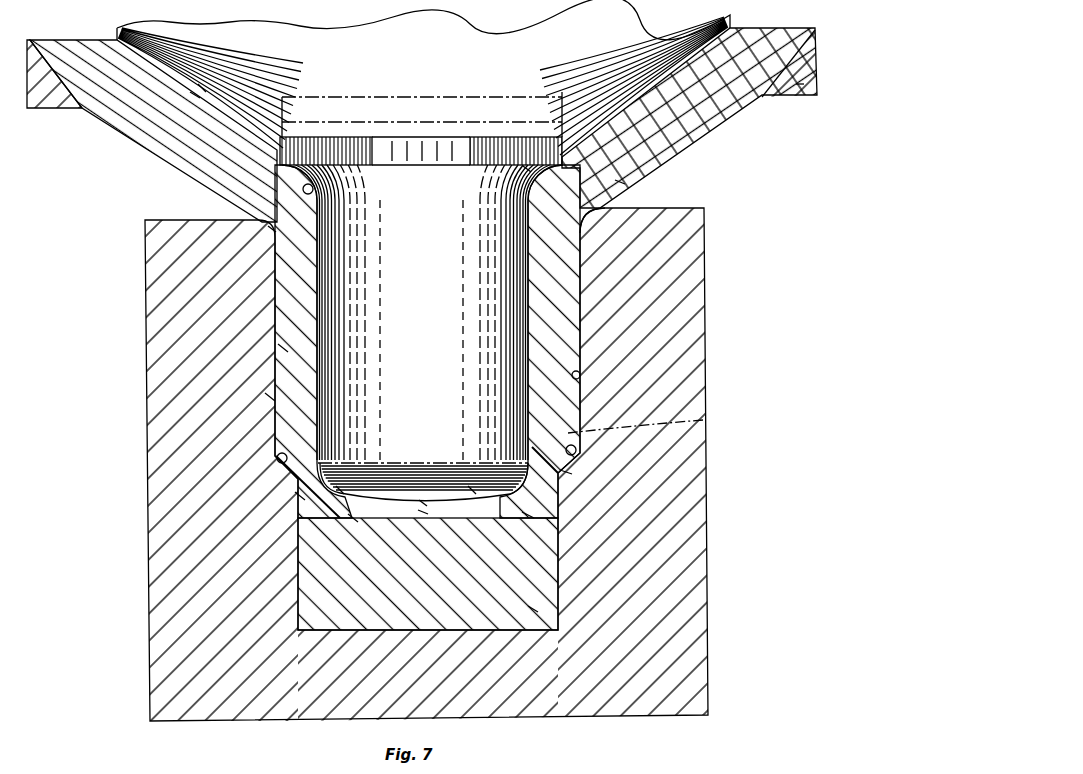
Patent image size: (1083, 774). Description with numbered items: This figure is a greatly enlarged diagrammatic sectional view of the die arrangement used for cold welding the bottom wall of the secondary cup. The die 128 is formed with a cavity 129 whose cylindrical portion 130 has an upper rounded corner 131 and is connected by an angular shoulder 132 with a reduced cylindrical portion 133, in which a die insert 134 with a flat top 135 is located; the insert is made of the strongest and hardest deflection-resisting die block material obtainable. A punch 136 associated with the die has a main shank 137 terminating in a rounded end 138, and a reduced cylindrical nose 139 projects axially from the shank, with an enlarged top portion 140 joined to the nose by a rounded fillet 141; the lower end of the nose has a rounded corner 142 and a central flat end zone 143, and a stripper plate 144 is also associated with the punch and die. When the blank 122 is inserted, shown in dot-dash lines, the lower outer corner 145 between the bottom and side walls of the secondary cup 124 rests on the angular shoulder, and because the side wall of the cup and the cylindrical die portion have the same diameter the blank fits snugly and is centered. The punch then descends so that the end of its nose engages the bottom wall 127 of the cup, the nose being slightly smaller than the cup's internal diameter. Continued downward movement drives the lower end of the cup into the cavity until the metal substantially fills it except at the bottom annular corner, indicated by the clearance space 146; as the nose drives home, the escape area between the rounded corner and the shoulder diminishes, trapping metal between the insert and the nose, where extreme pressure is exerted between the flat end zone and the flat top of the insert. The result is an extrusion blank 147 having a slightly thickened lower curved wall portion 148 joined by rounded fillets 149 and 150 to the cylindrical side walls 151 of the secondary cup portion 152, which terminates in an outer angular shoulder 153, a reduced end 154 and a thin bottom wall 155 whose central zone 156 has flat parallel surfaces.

The blank 122 is at (685, 138).
The secondary cup 124 is at (315, 296).
The bottom wall 127 is at (472, 490).
The die 128 is at (689, 258).
The cavity 129 is at (580, 328).
The cylindrical portion 130 is at (580, 375).
The upper rounded corner 131 is at (600, 212).
The angular shoulder 132 is at (566, 472).
The reduced cylindrical portion 133 is at (528, 508).
The die insert 134 is at (533, 610).
The flat top 135 is at (353, 518).
The punch 136 is at (197, 94).
The main shank 137 is at (423, 77).
The rounded end 138 is at (196, 94).
The nose 139 is at (422, 333).
The enlarged top portion 140 is at (440, 150).
The rounded fillet 141 is at (527, 168).
The rounded corner 142 is at (340, 490).
The central flat end zone 143 is at (423, 503).
The stripper plate 144 is at (799, 86).
The lower outer corner 145 is at (703, 420).
The clearance space 146 is at (560, 505).
The extrusion blank 147 is at (169, 172).
The lower curved wall portion 148 is at (620, 182).
The rounded fillet 149 is at (312, 190).
The rounded fillet 150 is at (272, 229).
The cylindrical side walls 151 is at (283, 348).
The secondary cup portion 152 is at (264, 401).
The outer angular shoulder 153 is at (277, 458).
The reduced end 154 is at (300, 496).
The thin bottom wall 155 is at (528, 515).
The central zone 156 is at (423, 512).